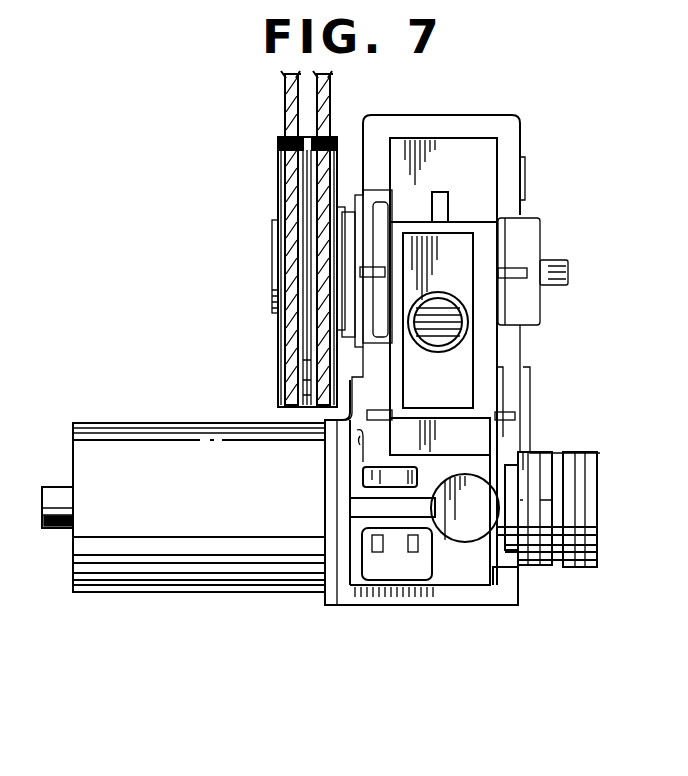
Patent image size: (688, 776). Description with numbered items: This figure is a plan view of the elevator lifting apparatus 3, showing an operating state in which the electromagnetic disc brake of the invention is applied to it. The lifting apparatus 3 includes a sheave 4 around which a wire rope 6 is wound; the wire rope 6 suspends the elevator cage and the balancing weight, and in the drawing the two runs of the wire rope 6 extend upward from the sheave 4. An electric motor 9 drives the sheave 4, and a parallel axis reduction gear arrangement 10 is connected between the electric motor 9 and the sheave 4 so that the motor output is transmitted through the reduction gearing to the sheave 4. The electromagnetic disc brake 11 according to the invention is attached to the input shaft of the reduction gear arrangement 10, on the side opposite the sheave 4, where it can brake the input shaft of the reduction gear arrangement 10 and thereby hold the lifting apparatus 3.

The lifting apparatus 3 is at (262, 378).
The sheave 4 is at (278, 190).
The wire rope 6 is at (285, 100).
The electric motor 9 is at (193, 575).
The parallel axis reduction gear arrangement 10 is at (485, 157).
The electromagnetic disc brake 11 is at (573, 567).